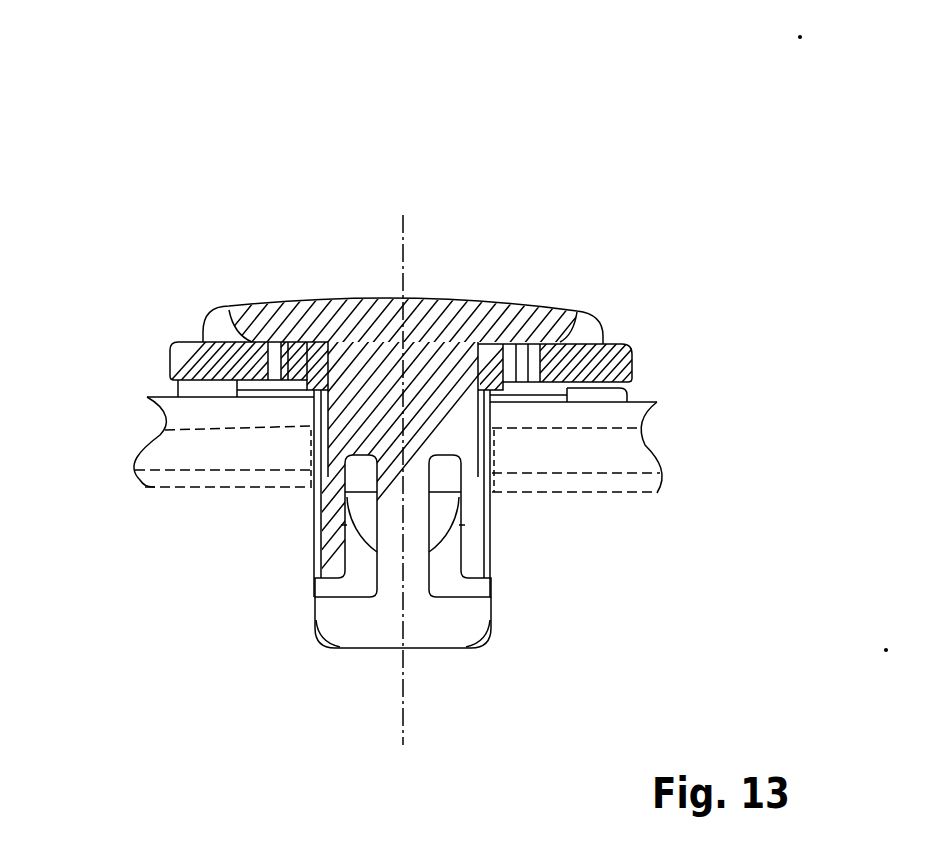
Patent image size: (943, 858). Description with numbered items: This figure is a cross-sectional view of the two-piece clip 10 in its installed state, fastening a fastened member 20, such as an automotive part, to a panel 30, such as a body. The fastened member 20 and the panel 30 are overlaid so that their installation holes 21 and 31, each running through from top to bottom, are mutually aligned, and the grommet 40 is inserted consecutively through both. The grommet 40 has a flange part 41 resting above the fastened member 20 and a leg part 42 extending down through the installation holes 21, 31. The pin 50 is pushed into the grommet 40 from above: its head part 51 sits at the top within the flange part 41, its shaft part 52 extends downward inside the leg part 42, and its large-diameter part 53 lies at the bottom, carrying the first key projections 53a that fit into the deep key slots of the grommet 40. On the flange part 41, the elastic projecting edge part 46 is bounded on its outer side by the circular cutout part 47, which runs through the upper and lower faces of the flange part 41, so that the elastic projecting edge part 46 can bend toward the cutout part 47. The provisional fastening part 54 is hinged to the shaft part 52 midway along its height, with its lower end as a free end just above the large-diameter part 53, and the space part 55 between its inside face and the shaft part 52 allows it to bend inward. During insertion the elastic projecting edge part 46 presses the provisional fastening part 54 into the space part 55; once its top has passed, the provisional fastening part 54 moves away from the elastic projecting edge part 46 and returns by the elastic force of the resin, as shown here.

The two-piece clip 10 is at (166, 86).
The fastened member 20 is at (138, 452).
The installation hole 21 is at (163, 430).
The panel 30 is at (202, 477).
The installation hole 31 is at (310, 487).
The grommet 40 is at (478, 420).
The flange part 41 is at (632, 363).
The leg part 42 is at (480, 585).
The elastic projecting edge part 46 is at (503, 343).
The cutout part 47 is at (545, 336).
The pin 50 is at (392, 448).
The head part 51 is at (434, 310).
The shaft part 52 is at (472, 440).
The large-diameter part 53 is at (420, 647).
The first key projection 53a is at (327, 630).
The provisional fastening part 54 is at (482, 522).
The space part 55 is at (453, 552).